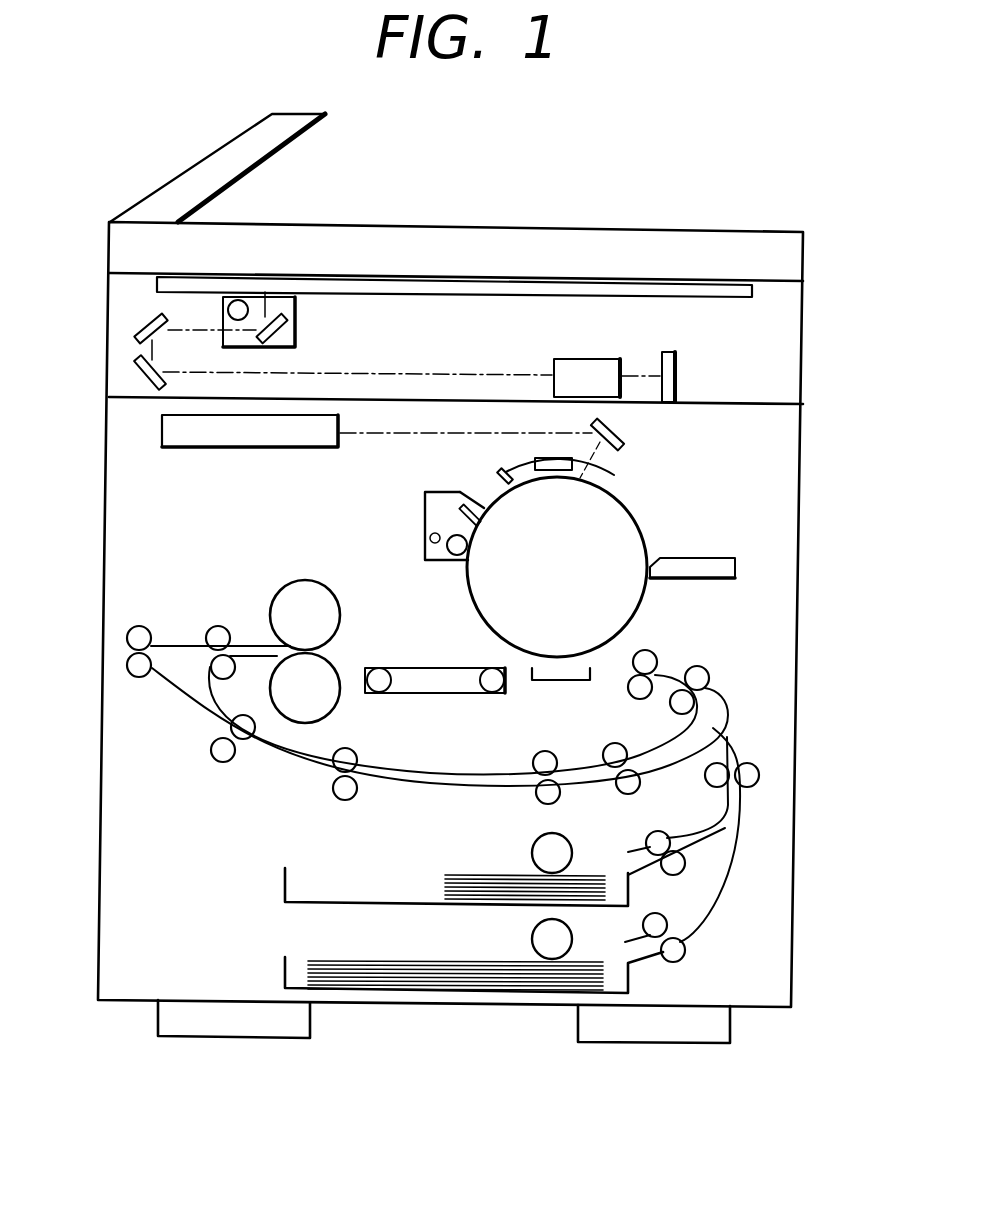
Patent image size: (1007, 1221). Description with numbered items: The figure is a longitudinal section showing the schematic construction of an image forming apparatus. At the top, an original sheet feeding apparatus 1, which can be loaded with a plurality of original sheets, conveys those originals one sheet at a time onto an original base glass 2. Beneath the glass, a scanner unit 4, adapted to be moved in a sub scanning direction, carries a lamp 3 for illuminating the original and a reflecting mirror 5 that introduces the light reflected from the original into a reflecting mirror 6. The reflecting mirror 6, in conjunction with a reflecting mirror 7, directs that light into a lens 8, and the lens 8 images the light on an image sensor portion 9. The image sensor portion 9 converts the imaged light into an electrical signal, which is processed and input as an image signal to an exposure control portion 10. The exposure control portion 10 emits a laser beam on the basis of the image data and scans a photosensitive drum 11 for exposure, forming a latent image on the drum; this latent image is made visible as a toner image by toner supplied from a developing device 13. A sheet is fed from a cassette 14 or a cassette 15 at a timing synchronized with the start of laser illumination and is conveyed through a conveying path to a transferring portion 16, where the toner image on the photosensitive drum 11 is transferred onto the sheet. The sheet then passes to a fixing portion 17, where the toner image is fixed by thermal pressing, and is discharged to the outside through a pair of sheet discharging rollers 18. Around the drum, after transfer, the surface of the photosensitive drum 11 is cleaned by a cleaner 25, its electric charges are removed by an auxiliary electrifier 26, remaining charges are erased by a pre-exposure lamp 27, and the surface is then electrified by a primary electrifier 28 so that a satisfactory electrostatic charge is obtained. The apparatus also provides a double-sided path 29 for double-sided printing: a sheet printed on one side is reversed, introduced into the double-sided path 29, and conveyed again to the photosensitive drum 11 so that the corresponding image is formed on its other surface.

The original sheet feeding apparatus 1 is at (272, 143).
The original base glass 2 is at (385, 283).
The lamp 3 is at (238, 300).
The scanner unit 4 is at (295, 312).
The reflecting mirror 5 is at (276, 345).
The reflecting mirror 6 is at (140, 327).
The reflecting mirror 7 is at (137, 382).
The lens 8 is at (572, 362).
The image sensor portion 9 is at (676, 362).
The exposure control portion 10 is at (186, 440).
The photosensitive drum 11 is at (627, 523).
The developing device 13 is at (698, 573).
The cassette 14 is at (284, 884).
The cassette 15 is at (284, 970).
The transferring portion 16 is at (562, 682).
The fixing portion 17 is at (330, 673).
The pair of sheet discharging rollers 18 is at (133, 663).
The cleaner 25 is at (424, 523).
The auxiliary electrifier 26 is at (503, 482).
The pre-exposure lamp 27 is at (525, 462).
The primary electrifier 28 is at (578, 476).
The double-sided path 29 is at (420, 770).